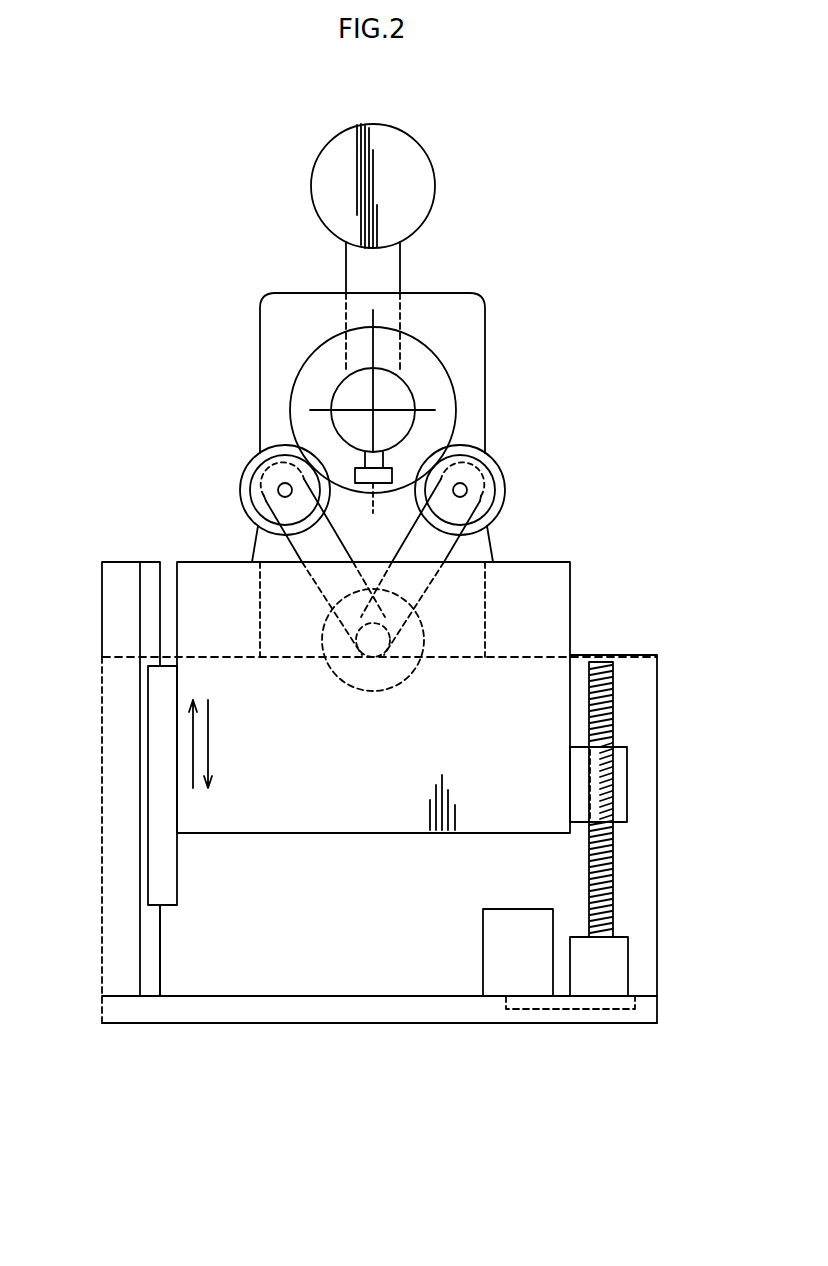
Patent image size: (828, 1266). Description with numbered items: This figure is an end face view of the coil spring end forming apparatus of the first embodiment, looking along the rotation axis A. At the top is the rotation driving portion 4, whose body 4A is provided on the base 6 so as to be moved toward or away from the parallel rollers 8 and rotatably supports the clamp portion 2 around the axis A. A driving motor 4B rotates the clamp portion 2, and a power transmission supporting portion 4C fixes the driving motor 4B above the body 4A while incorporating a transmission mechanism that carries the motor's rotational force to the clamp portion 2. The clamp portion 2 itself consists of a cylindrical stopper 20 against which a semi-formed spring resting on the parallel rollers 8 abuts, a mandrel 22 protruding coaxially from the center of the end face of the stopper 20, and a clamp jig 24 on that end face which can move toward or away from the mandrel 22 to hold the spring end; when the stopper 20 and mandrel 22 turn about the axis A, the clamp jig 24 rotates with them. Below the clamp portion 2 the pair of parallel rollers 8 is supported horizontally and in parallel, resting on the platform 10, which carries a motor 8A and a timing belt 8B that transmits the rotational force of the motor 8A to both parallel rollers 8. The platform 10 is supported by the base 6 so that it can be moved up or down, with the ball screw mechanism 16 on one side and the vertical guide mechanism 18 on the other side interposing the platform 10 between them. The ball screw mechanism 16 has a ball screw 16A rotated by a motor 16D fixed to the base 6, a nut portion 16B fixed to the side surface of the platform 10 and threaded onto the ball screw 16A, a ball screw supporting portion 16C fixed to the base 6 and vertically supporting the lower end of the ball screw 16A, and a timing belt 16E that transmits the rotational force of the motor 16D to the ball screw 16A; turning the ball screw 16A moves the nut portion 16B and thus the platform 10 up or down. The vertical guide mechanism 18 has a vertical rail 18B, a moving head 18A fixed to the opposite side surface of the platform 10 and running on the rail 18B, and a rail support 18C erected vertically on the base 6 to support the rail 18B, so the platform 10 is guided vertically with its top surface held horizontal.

The clamp portion 2 is at (456, 383).
The rotation driving portion 4 is at (490, 302).
The body 4A is at (475, 342).
The driving motor 4B is at (425, 177).
The power transmission supporting portion 4C is at (387, 262).
The base 6 is at (660, 680).
The parallel rollers 8 is at (241, 493).
The motor 8A is at (373, 693).
The timing belt 8B is at (283, 547).
The platform 10 is at (572, 590).
The ball screw mechanism 16 is at (614, 893).
The ball screw 16A is at (614, 852).
The nut portion 16B is at (627, 788).
The ball screw supporting portion 16C is at (630, 967).
The motor 16D is at (483, 951).
The timing belt 16E is at (567, 1010).
The vertical guide mechanism 18 is at (117, 561).
The moving head 18A is at (167, 870).
The rail 18B is at (152, 942).
The rail support 18C is at (102, 612).
The cylindrical stopper 20 is at (350, 348).
The mandrel 22 is at (352, 388).
The clamp jig 24 is at (371, 494).
The axis A is at (378, 410).